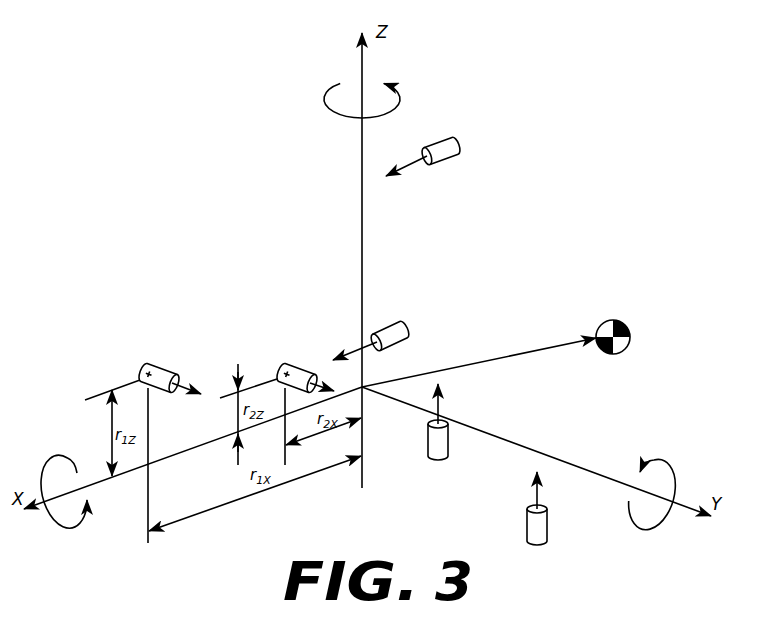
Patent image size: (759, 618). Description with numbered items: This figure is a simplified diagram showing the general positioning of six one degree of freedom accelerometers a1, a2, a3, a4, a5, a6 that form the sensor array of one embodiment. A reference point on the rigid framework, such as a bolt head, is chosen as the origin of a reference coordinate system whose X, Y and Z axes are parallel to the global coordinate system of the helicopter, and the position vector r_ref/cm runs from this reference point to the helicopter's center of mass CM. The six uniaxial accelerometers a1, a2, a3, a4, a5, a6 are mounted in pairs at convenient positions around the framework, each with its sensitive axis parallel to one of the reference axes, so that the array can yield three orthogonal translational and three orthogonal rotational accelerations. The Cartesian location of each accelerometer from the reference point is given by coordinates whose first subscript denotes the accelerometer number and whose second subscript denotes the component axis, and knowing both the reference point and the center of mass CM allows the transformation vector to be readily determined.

The accelerometer a1 is at (169, 370).
The accelerometer a2 is at (304, 366).
The accelerometer a3 is at (576, 508).
The accelerometer a4 is at (472, 434).
The accelerometer a5 is at (472, 167).
The accelerometer a6 is at (402, 329).
The center of mass CM is at (513, 354).